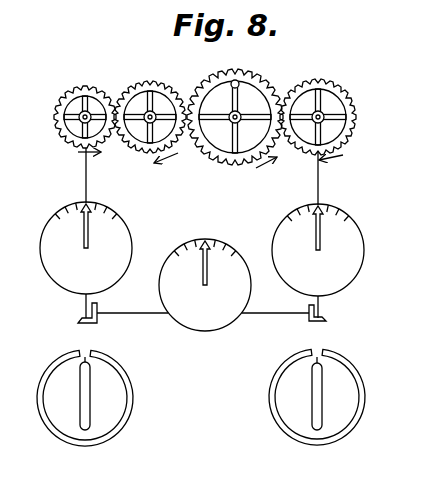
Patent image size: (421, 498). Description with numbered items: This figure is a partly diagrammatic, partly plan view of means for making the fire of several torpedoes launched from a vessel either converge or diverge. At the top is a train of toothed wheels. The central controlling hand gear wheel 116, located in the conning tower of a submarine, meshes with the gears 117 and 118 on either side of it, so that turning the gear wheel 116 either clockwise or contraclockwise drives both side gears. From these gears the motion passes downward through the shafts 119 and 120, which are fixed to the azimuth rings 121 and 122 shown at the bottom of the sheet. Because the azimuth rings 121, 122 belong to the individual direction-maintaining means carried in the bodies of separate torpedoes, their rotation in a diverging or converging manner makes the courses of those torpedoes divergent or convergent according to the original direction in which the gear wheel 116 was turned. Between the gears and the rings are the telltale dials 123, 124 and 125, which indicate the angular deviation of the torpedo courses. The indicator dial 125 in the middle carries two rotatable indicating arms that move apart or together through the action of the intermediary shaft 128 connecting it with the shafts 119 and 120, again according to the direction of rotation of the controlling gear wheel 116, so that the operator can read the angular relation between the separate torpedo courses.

The gear wheel 116 is at (265, 85).
The gear 117 is at (339, 89).
The gear 118 is at (166, 85).
The shaft 119 is at (318, 177).
The shaft 120 is at (86, 175).
The azimuth ring 121 is at (343, 357).
The azimuth ring 122 is at (110, 360).
The telltale dial 123 is at (363, 251).
The telltale dial 124 is at (121, 227).
The indicator dial 125 is at (238, 258).
The intermediary shaft 128 is at (269, 313).